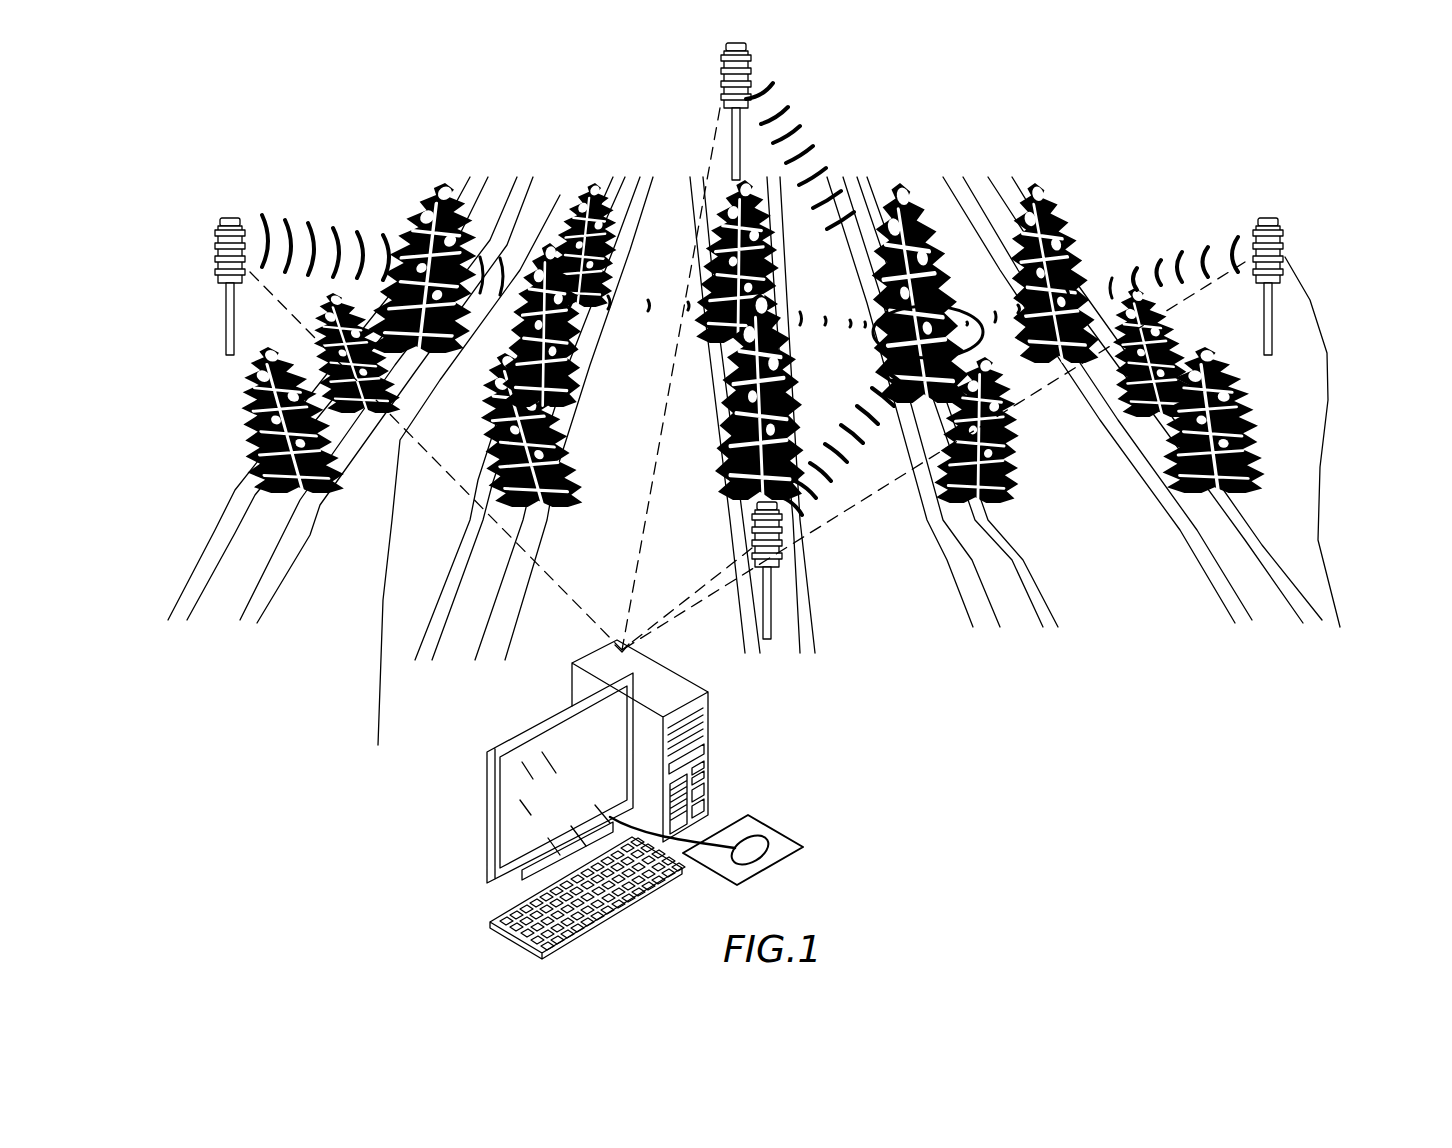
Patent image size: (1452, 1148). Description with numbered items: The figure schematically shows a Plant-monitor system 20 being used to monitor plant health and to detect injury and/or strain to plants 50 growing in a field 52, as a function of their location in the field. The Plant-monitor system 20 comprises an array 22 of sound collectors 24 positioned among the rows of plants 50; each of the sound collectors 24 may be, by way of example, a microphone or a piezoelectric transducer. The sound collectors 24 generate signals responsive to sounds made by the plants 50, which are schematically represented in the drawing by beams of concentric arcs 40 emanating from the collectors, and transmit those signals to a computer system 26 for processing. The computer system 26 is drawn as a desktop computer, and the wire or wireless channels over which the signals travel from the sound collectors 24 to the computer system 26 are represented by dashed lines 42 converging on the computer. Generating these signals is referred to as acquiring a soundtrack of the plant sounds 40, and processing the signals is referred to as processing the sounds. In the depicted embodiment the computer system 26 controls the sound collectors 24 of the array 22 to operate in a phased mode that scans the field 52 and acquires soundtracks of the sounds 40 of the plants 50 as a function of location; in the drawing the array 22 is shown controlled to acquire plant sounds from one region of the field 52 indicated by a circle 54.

The Plant-monitor system 20 is at (955, 842).
The array of sound collectors 22 is at (1397, 628).
The sound collectors 24 is at (783, 530).
The computer system 26 is at (730, 770).
The beams of concentric arcs 40 is at (772, 112).
The dashed lines 42 is at (630, 570).
The plants 50 is at (580, 195).
The field 52 is at (1088, 160).
The circle 54 is at (970, 307).